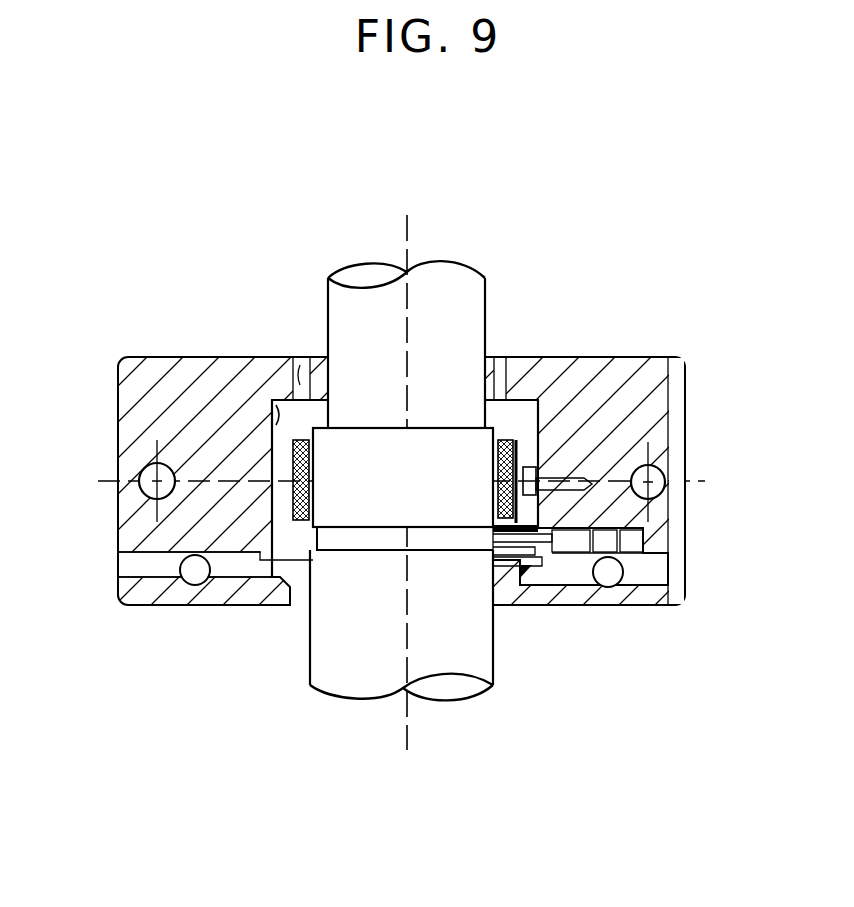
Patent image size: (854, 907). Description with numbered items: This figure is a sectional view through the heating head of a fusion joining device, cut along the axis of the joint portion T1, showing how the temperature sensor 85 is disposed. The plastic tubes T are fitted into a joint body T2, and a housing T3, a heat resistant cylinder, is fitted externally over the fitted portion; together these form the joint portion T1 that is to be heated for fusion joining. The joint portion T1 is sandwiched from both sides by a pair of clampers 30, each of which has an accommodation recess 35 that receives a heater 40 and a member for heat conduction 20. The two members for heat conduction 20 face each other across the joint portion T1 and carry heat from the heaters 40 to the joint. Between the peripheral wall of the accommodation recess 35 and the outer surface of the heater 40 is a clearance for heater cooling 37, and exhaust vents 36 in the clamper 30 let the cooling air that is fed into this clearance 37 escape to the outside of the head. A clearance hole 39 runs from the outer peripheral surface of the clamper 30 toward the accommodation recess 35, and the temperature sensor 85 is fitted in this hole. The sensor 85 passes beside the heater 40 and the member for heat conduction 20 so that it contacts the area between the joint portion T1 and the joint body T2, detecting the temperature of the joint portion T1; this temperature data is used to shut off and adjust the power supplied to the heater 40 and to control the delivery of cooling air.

The member for heat conduction 20 is at (293, 470).
The clamper 30 is at (128, 530).
The accommodation recess 35 is at (540, 416).
The exhaust vent 36 is at (300, 360).
The clearance for heater cooling 37 is at (272, 400).
The clearance hole 39 is at (569, 530).
The heater 40 is at (288, 456).
The temperature sensor 85 is at (610, 542).
The plastic tube T is at (465, 335).
The joint portion T1 is at (345, 518).
The joint body T2 is at (322, 653).
The housing T3 is at (373, 517).